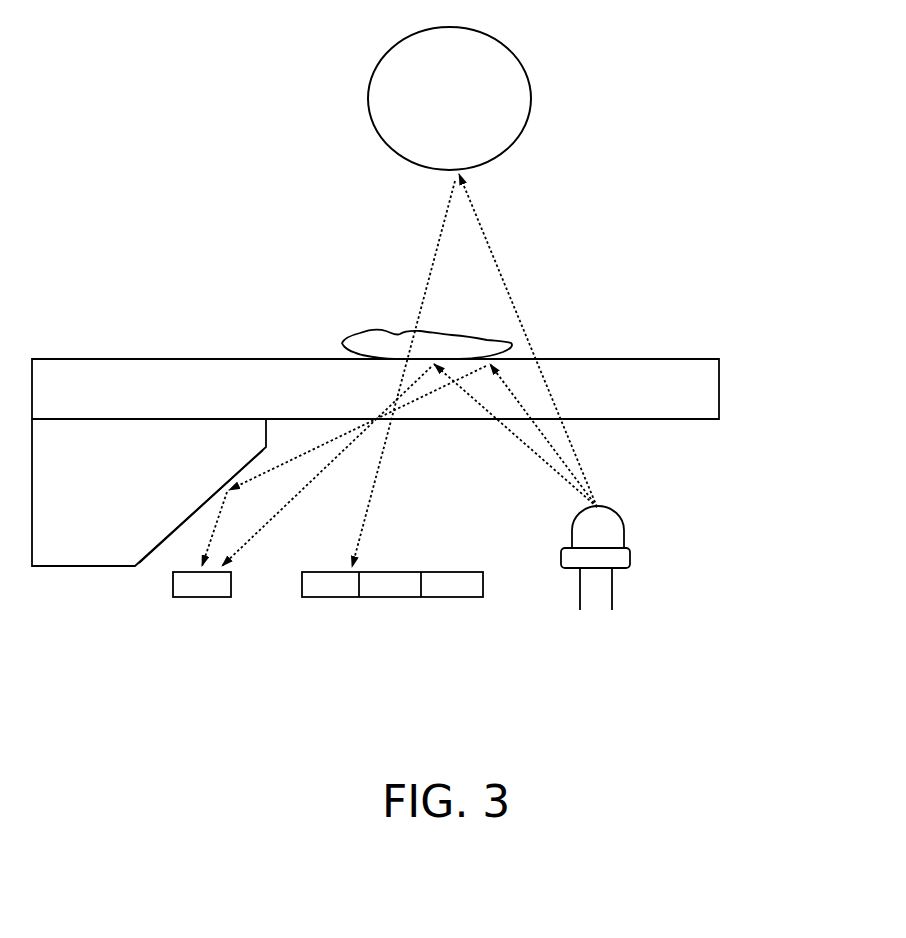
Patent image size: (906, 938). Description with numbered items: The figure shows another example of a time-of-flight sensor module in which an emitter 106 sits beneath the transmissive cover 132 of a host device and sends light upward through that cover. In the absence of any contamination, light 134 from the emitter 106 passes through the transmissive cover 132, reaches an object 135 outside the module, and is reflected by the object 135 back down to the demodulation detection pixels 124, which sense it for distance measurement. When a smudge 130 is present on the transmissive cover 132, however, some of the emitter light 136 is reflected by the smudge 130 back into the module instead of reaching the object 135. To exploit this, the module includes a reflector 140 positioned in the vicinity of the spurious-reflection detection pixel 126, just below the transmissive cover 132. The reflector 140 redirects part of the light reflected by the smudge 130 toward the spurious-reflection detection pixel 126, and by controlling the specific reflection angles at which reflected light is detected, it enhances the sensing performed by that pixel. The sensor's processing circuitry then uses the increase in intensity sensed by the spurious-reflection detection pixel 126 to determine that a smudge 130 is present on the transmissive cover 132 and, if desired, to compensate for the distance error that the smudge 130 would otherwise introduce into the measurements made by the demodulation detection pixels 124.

The object 135 is at (531, 106).
The smudge 130 is at (460, 332).
The transmissive cover 132 is at (667, 359).
The emitter 106 is at (622, 538).
The light 134 is at (582, 458).
The emitter light 136 is at (517, 442).
The reflector 140 is at (187, 527).
The spurious-reflection detection pixel 126 is at (197, 597).
The demodulation detection pixels 124 is at (390, 597).